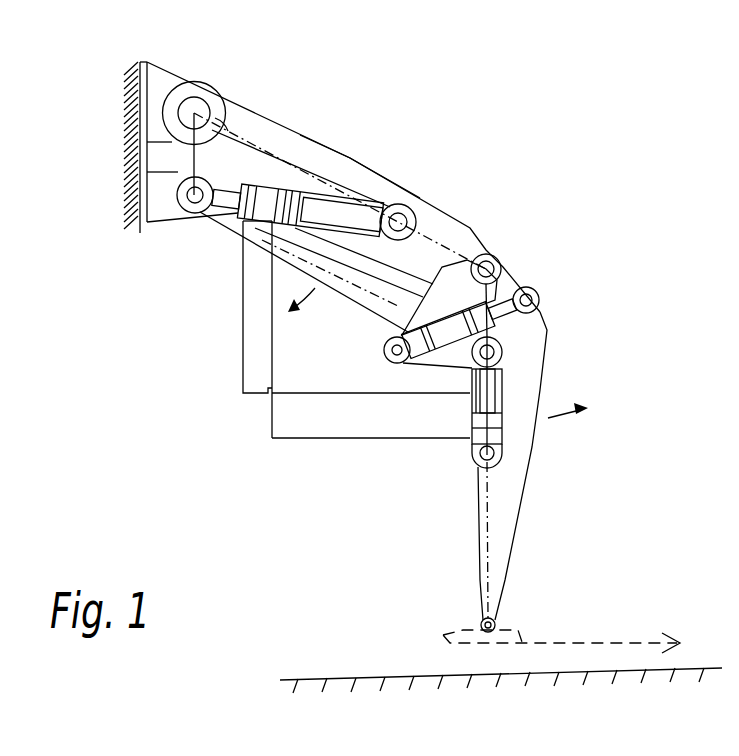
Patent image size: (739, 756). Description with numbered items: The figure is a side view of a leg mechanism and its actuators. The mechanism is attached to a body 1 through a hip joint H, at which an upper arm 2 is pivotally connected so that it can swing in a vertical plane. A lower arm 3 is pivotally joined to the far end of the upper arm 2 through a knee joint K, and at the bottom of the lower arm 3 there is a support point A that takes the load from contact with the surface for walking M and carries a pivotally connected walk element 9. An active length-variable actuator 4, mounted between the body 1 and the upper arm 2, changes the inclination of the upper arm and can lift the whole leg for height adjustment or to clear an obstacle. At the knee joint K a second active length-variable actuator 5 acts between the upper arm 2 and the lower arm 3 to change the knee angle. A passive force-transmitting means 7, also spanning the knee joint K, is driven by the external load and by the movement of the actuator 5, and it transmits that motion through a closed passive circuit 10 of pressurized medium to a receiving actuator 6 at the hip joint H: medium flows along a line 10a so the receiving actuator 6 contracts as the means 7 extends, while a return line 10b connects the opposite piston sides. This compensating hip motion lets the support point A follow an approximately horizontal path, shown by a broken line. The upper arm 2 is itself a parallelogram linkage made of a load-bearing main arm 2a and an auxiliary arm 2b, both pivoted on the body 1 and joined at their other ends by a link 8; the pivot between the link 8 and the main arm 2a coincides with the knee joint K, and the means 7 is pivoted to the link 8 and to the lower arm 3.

The body 1 is at (155, 72).
The hip joint H is at (195, 112).
The upper arm 2 is at (323, 128).
The main arm 2a is at (350, 162).
The auxiliary arm 2b is at (360, 285).
The lower arm 3 is at (512, 500).
The active length-variable actuator 4 is at (413, 207).
The active length-variable actuator 5 is at (537, 289).
The receiving actuator 6 is at (240, 215).
The passive force-transmitting means 7 is at (502, 380).
The link 8 is at (492, 254).
The walk element 9 is at (522, 638).
The passive circuit 10 is at (258, 416).
The line 10a is at (383, 393).
The return line 10b is at (318, 438).
The support point A is at (497, 623).
The knee joint K is at (503, 267).
The surface for walking M is at (345, 678).